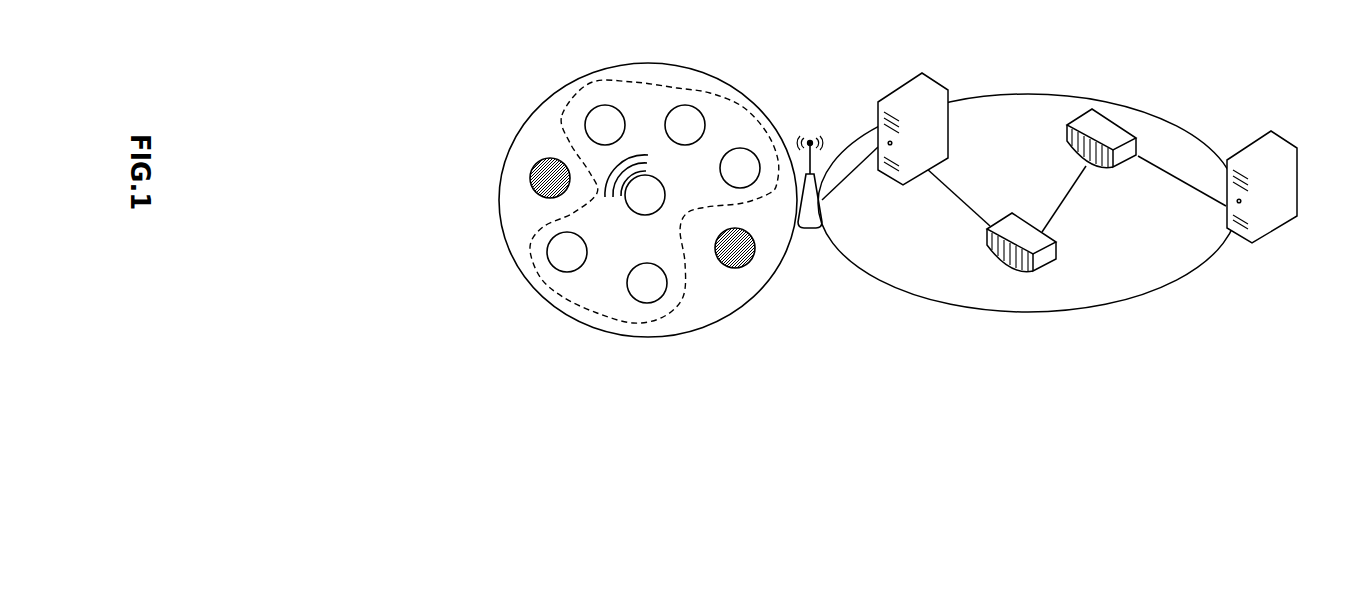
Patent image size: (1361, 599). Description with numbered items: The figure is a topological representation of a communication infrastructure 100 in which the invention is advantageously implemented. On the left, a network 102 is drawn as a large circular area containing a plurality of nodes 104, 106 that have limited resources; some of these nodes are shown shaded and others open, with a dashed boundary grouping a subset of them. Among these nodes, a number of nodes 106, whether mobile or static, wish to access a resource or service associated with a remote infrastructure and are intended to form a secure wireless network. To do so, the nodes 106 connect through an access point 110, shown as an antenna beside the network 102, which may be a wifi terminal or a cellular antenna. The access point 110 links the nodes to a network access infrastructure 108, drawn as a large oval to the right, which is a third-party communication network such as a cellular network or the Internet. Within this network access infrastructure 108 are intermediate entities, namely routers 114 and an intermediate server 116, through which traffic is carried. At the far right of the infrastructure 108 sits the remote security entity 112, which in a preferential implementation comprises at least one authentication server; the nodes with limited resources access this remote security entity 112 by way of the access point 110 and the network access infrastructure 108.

The communication infrastructure 100 is at (857, 458).
The network 102 is at (540, 100).
The node 104 is at (530, 190).
The node 106 is at (698, 107).
The network access infrastructure 108 is at (1032, 92).
The access point 110 is at (820, 121).
The remote security entity 112 is at (1297, 216).
The router 114 is at (1037, 268).
The intermediate server 116 is at (937, 82).